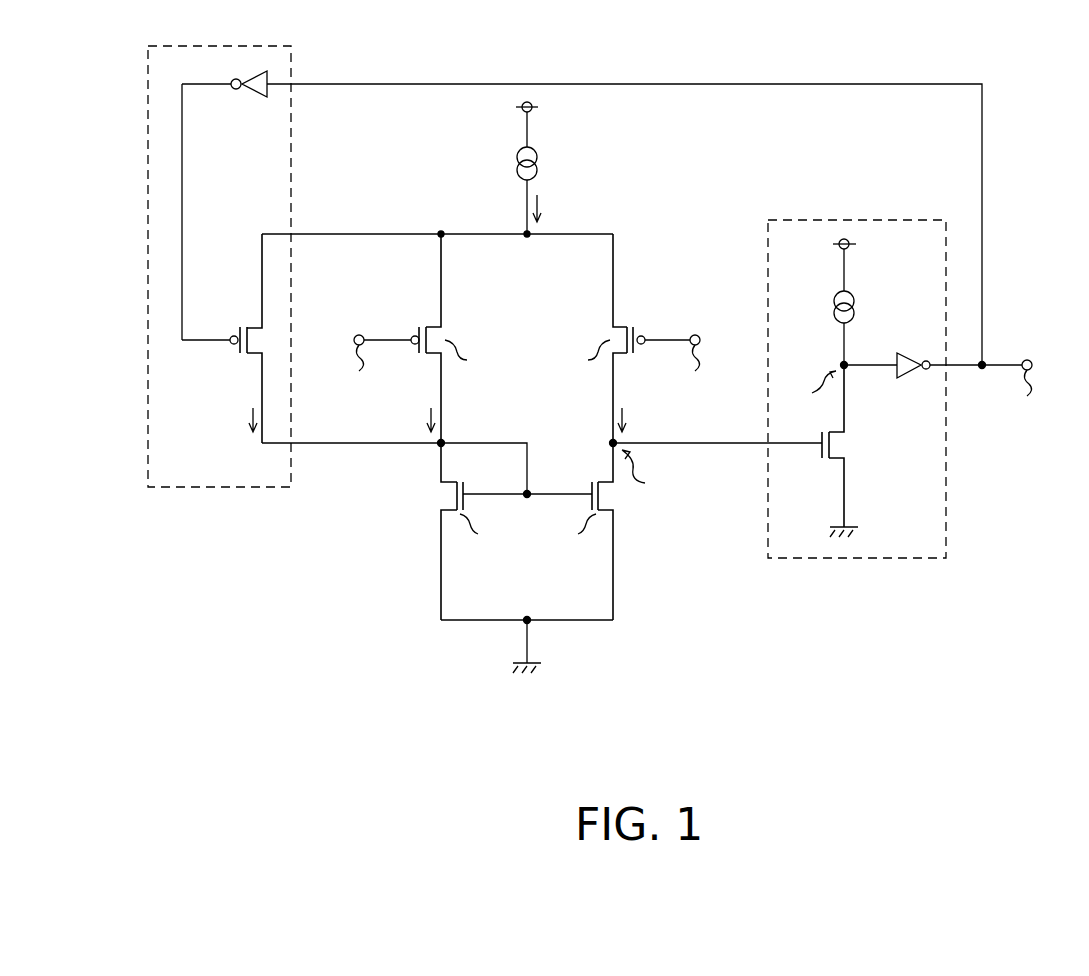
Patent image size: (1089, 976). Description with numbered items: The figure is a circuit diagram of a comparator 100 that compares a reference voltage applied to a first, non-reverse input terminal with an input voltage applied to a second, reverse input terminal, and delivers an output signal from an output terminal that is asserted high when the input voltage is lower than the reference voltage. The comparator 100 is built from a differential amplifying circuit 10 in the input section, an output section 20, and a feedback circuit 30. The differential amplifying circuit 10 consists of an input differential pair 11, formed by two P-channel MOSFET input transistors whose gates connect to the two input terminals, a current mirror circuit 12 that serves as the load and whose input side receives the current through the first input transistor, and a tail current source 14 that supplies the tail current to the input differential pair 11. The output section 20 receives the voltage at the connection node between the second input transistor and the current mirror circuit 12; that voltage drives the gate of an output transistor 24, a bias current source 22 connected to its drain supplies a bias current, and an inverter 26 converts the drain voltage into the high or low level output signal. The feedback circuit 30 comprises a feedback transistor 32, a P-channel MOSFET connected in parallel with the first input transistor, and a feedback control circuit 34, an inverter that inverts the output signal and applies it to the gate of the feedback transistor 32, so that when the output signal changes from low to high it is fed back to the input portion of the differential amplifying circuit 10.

The comparator 100 is at (600, 412).
The differential amplifying circuit 10 is at (630, 683).
The input differential pair 11 is at (590, 374).
The current mirror circuit 12 is at (604, 559).
The tail current source 14 is at (540, 163).
The output section 20 is at (895, 415).
The bias current source 22 is at (857, 305).
The output transistor 24 is at (849, 444).
The inverter 26 is at (910, 380).
The feedback circuit 30 is at (219, 292).
The feedback transistor 32 is at (250, 324).
The feedback control circuit 34 is at (257, 99).